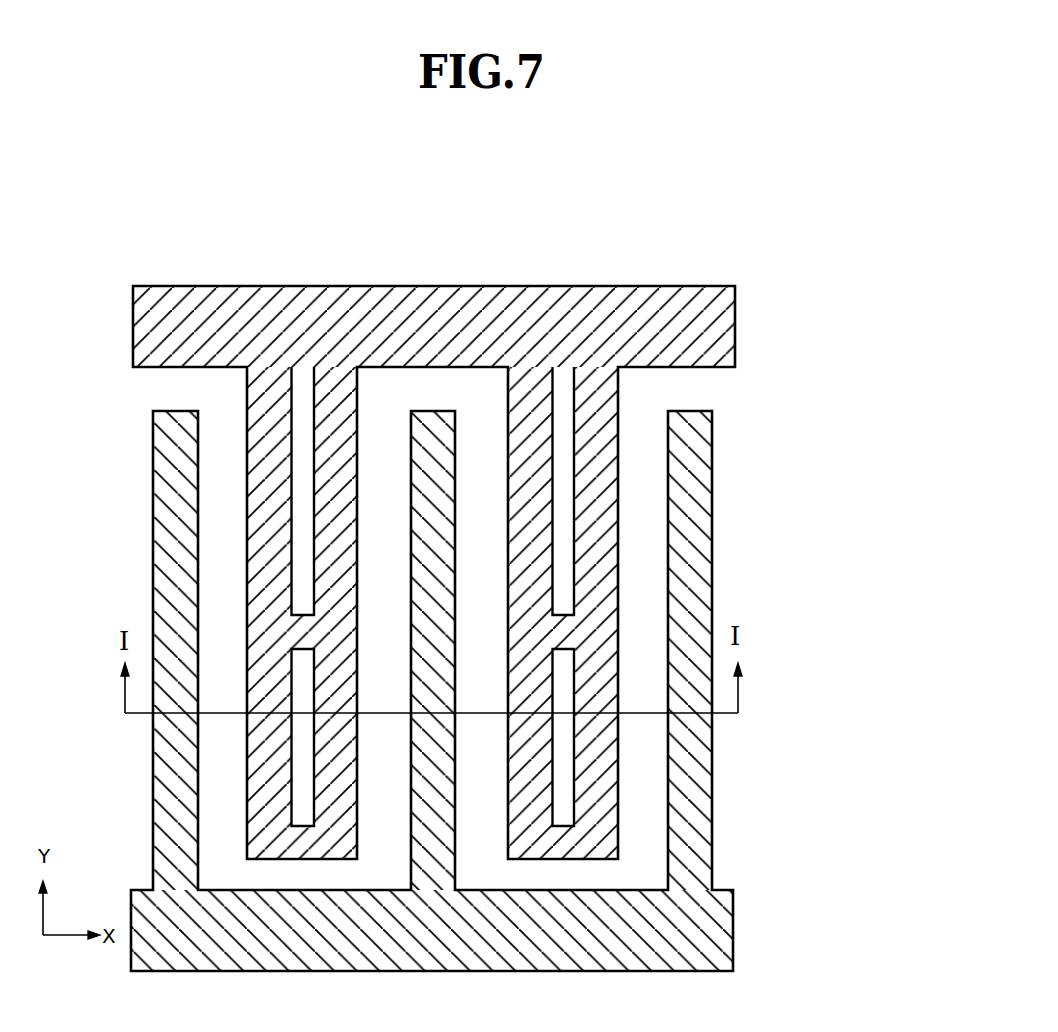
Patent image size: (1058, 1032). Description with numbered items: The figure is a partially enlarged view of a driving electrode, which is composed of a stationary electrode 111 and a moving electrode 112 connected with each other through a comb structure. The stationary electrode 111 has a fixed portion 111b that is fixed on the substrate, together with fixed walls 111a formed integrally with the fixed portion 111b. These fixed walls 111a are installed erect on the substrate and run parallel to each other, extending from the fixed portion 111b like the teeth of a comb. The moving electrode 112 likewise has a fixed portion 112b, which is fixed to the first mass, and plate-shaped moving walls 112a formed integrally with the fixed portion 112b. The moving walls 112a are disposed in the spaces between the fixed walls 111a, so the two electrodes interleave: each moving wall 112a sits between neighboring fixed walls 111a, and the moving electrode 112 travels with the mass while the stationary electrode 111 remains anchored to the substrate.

The stationary electrode 111 is at (530, 691).
The fixed walls 111a is at (692, 852).
The fixed portion 111b is at (707, 935).
The moving electrode 112 is at (448, 473).
The moving walls 112a is at (607, 420).
The fixed portion 112b is at (598, 293).